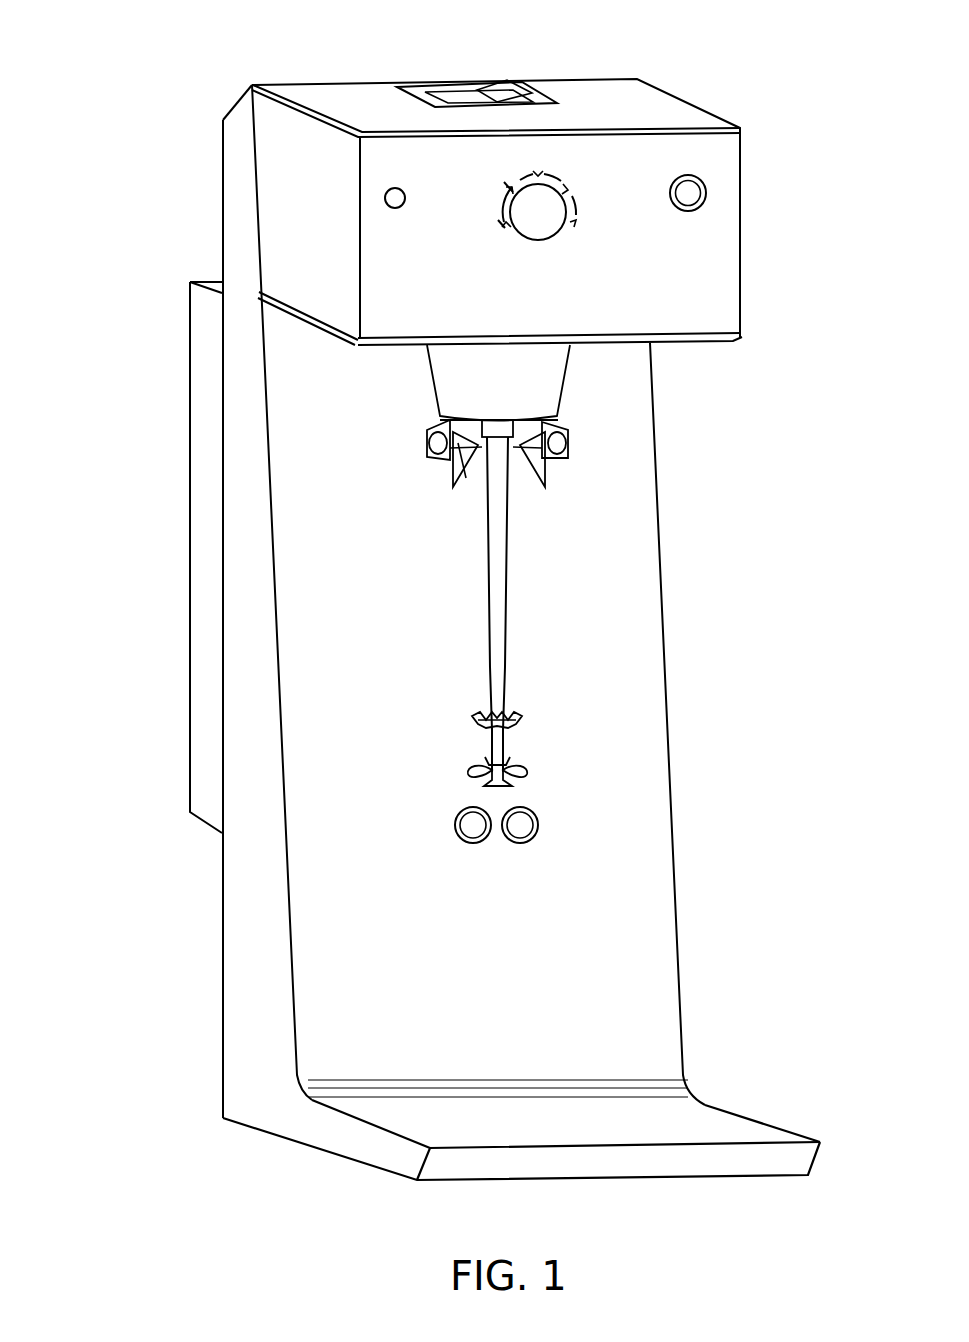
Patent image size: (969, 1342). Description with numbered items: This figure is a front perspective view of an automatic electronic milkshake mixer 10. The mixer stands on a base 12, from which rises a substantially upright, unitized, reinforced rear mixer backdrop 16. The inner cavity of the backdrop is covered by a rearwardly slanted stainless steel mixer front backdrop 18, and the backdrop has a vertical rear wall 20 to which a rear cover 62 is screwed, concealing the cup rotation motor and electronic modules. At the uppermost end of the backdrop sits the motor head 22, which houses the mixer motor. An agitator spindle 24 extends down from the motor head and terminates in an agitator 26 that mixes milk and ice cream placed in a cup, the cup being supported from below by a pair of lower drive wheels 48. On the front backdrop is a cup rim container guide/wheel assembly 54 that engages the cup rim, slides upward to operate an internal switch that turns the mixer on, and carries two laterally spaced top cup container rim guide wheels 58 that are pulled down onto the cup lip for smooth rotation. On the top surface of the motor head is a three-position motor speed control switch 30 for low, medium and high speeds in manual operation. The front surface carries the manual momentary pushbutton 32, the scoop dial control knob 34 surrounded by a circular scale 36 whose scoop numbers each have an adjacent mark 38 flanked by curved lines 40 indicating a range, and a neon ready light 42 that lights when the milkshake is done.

The automatic electronic milkshake mixer 10 is at (146, 58).
The base 12 is at (723, 1108).
The rear mixer backdrop 16 is at (232, 993).
The mixer front backdrop 18 is at (667, 916).
The rear wall 20 is at (222, 925).
The motor head 22 is at (655, 100).
The agitator spindle 24 is at (498, 562).
The agitator 26 is at (528, 772).
The motor speed control switch 30 is at (493, 88).
The manual momentary pushbutton 32 is at (696, 192).
The scoop dial control knob 34 is at (538, 222).
The circular scale 36 is at (596, 169).
The mark 38 is at (505, 243).
The curved line 40 is at (504, 198).
The ready light 42 is at (384, 197).
The lower drive wheels 48 is at (456, 826).
The cup rim container guide/wheel assembly 54 is at (478, 440).
The top cup container rim guide wheels 58 is at (408, 434).
The rear cover 62 is at (198, 672).